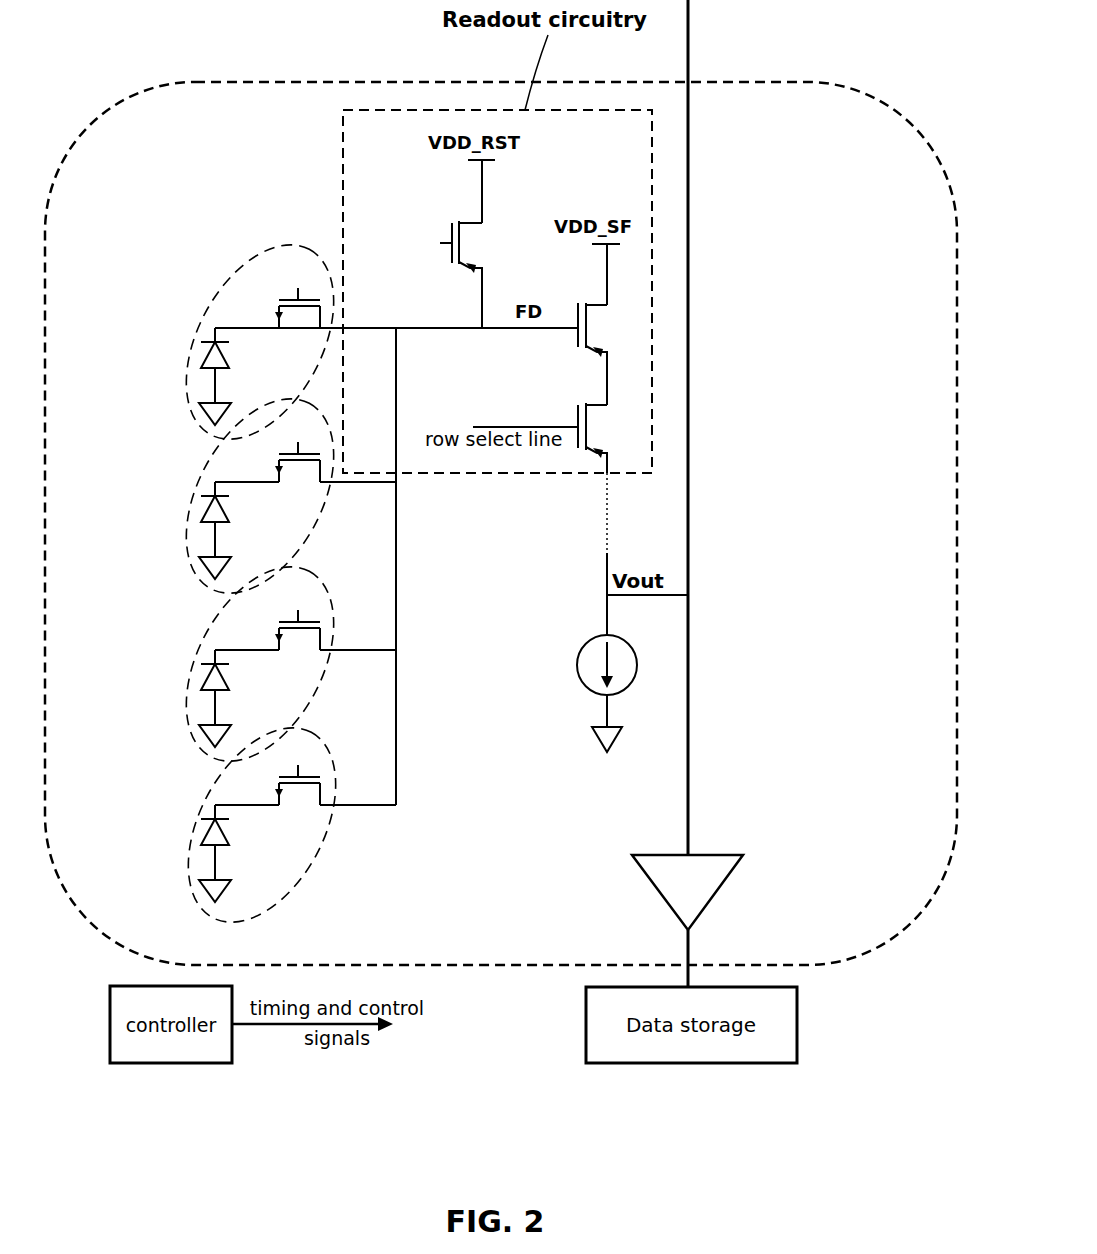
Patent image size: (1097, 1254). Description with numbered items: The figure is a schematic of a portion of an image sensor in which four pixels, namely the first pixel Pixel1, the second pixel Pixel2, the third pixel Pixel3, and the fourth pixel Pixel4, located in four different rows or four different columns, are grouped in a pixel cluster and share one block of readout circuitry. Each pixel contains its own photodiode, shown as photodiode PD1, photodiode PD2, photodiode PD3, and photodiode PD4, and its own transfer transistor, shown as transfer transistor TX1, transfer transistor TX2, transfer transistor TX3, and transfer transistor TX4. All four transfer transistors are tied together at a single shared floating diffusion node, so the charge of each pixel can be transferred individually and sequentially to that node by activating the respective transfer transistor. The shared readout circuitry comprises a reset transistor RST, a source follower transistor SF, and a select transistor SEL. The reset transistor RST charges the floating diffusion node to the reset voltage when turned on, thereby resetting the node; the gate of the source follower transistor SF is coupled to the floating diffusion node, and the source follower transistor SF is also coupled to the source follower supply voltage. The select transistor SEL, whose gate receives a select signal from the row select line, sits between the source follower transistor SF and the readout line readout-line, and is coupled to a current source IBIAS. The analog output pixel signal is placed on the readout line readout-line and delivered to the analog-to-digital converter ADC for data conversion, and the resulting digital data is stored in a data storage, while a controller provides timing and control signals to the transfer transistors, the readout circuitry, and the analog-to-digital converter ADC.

The pixel 1 Pixel1 is at (215, 298).
The pixel 2 Pixel2 is at (213, 478).
The pixel 3 Pixel3 is at (210, 644).
The pixel 4 Pixel4 is at (210, 805).
The photodiode PD1 is at (185, 376).
The photodiode PD2 is at (185, 530).
The photodiode PD3 is at (185, 698).
The photodiode PD4 is at (185, 853).
The transfer transistor TX1 is at (297, 297).
The transfer transistor TX2 is at (305, 451).
The transfer transistor TX3 is at (305, 619).
The transfer transistor TX4 is at (305, 774).
The reset transistor RST is at (447, 244).
The source follower transistor SF is at (600, 324).
The select transistor SEL is at (540, 477).
The current source IBIAS is at (571, 691).
The analog-to-digital converter ADC is at (687, 892).
The readout line readout-line is at (726, 493).